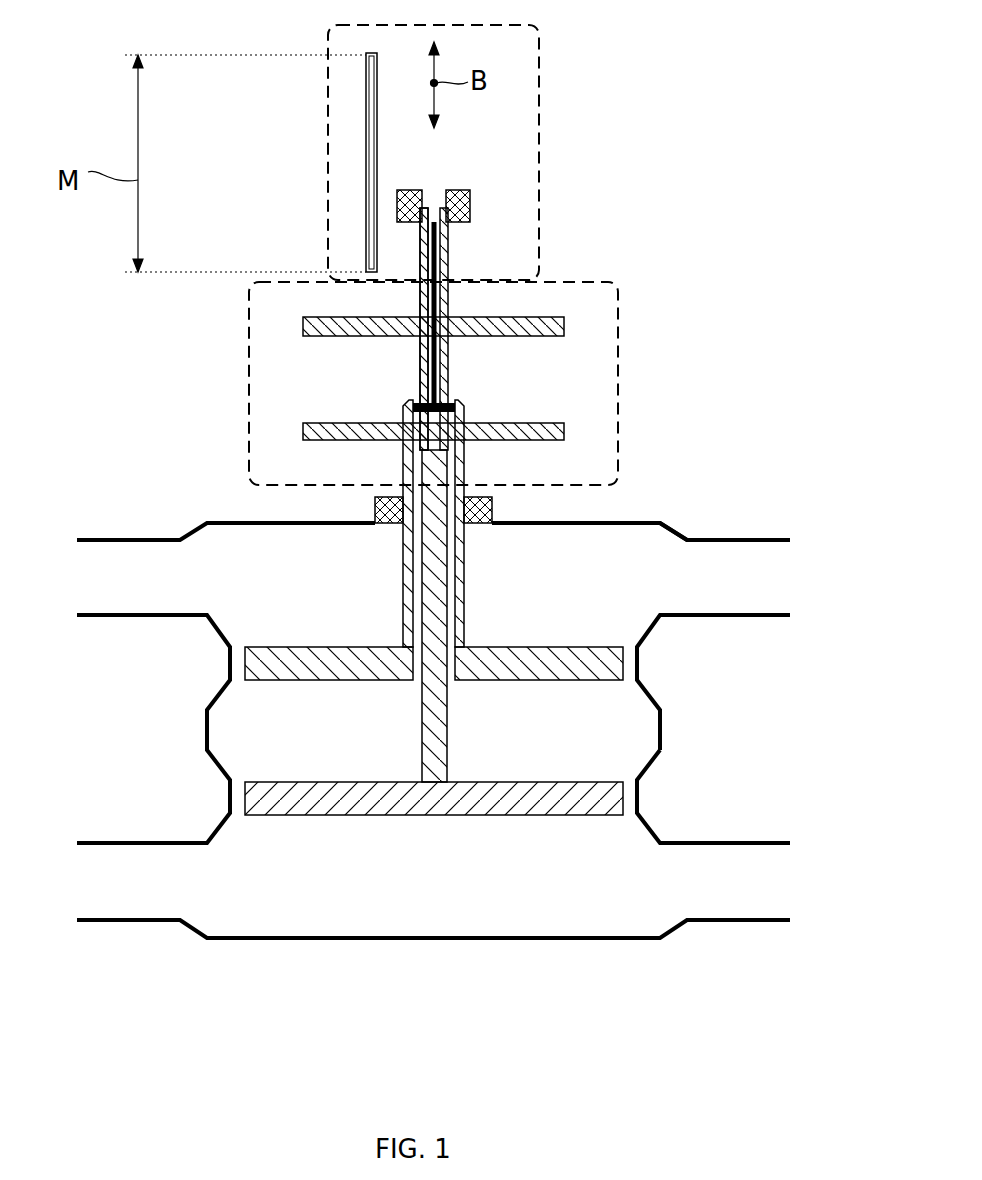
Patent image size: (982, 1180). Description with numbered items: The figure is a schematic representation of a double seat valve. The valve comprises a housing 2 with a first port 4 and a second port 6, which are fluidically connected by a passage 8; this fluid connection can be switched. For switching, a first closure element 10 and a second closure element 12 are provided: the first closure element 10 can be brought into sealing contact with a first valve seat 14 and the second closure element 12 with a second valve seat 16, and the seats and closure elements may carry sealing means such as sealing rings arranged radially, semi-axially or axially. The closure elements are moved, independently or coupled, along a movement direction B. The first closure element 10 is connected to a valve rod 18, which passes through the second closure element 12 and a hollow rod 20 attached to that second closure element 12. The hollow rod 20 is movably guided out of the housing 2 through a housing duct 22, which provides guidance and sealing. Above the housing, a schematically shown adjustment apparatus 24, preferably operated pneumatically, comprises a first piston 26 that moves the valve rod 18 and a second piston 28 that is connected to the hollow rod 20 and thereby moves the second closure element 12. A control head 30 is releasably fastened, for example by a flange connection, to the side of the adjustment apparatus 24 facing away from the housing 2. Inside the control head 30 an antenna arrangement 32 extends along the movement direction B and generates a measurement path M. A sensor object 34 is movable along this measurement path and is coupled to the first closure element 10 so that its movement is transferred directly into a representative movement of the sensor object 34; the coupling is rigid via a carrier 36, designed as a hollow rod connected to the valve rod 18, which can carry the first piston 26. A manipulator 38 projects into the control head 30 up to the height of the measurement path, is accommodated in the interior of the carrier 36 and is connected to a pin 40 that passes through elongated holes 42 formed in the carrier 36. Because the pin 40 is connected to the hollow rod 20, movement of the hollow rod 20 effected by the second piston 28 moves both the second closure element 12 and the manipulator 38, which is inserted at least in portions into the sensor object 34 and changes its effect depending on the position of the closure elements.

The housing 2 is at (615, 522).
The first port 4 is at (726, 877).
The second port 6 is at (716, 565).
The passage 8 is at (207, 718).
The first closure element 10 is at (640, 783).
The second closure element 12 is at (600, 667).
The first valve seat 14 is at (640, 797).
The second valve seat 16 is at (638, 672).
The valve rod 18 is at (440, 718).
The hollow rod 20 is at (403, 613).
The housing duct 22 is at (375, 500).
The adjustment apparatus 24 is at (618, 298).
The first piston 26 is at (565, 332).
The second piston 28 is at (565, 435).
The control head 30 is at (539, 53).
The antenna arrangement 32 is at (366, 115).
The sensor object 34 is at (397, 205).
The carrier 36 is at (425, 363).
The manipulator 38 is at (437, 250).
The pin 40 is at (410, 425).
The elongated holes 42 is at (425, 392).